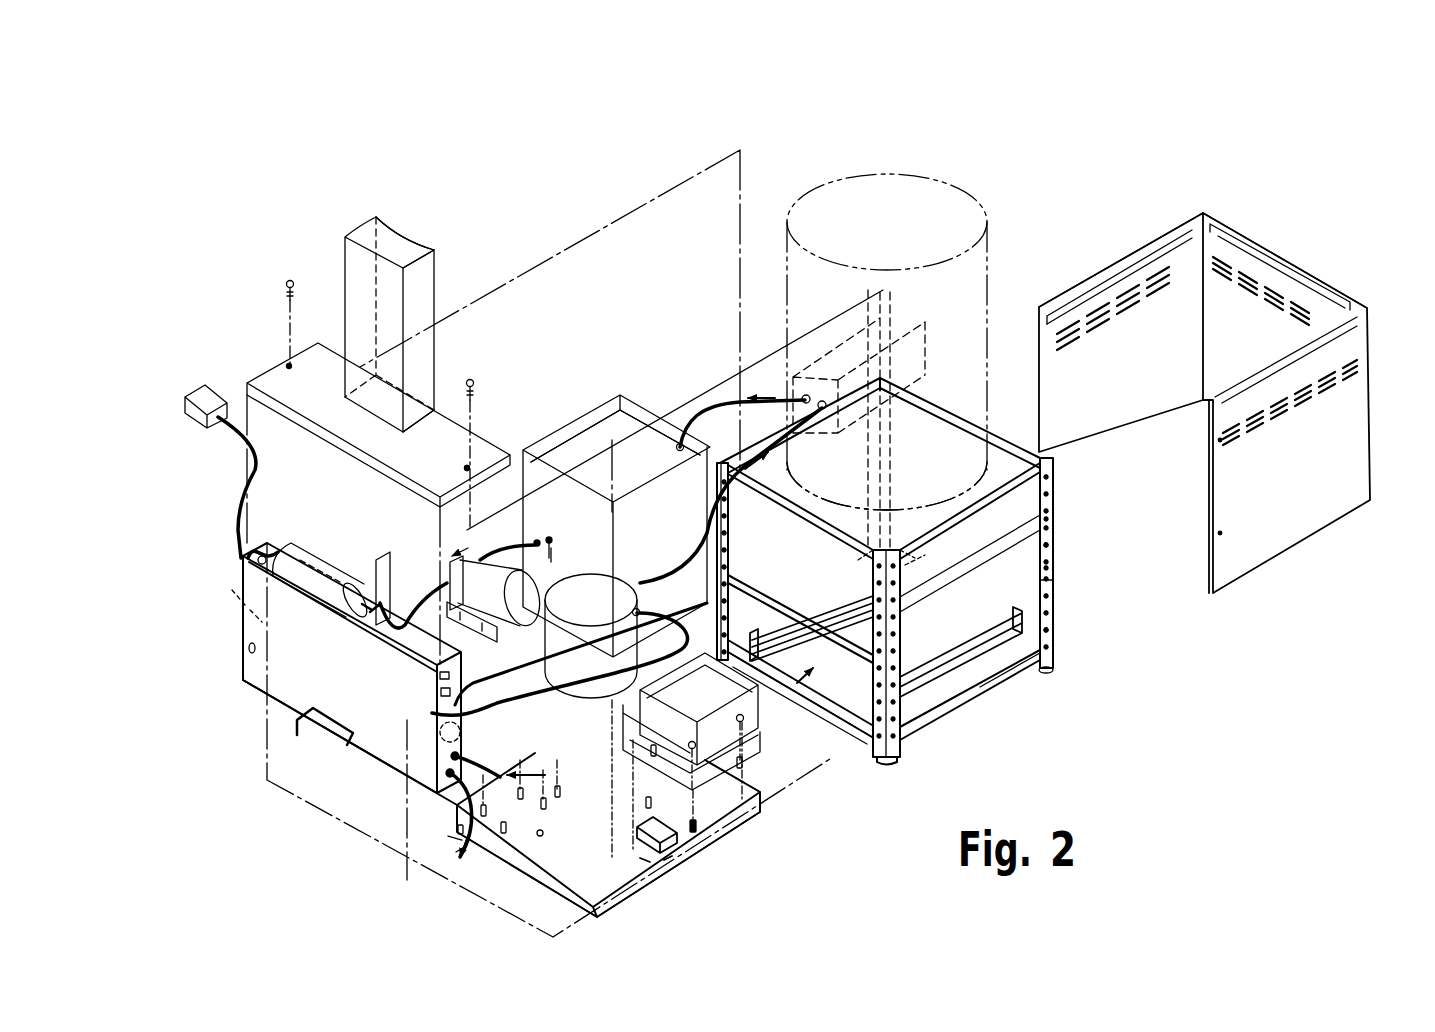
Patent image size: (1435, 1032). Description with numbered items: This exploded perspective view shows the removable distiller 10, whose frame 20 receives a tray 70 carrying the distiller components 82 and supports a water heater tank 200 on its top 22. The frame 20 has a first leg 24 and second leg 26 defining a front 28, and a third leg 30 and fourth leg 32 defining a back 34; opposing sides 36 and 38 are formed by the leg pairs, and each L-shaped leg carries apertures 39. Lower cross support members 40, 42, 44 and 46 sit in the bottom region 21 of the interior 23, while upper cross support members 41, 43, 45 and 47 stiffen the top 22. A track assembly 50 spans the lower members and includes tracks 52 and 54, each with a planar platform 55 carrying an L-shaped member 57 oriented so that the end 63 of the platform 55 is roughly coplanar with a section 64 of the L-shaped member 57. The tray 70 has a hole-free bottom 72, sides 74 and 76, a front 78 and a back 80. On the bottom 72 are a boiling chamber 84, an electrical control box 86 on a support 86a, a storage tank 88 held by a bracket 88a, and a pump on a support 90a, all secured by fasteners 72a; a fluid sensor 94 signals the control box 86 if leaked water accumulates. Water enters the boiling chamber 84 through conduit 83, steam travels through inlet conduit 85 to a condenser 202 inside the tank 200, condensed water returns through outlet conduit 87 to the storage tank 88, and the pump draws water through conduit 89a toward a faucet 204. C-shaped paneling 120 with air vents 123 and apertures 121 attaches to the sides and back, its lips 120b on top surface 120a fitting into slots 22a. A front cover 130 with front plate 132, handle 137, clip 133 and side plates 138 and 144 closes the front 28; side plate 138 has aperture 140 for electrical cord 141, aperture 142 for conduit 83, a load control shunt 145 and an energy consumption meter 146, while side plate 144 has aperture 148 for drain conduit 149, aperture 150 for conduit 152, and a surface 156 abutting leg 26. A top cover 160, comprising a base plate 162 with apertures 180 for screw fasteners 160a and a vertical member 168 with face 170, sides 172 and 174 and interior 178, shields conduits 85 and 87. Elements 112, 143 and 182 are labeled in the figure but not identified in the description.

The distiller 10 is at (818, 856).
The frame 20 is at (898, 574).
The bottom region 21 is at (950, 603).
The top 22 is at (1010, 455).
The slots 22a is at (1057, 588).
The interior 23 is at (1055, 566).
The first leg 24 is at (716, 580).
The second leg 26 is at (907, 760).
The front 28 is at (852, 740).
The third leg 30 is at (858, 513).
The fourth leg 32 is at (1052, 625).
The back 34 is at (1050, 542).
The side 36 is at (640, 567).
The side 38 is at (997, 678).
The apertures 39 is at (1047, 655).
The lower cross support member 40 is at (822, 740).
The upper cross support member 41 is at (783, 527).
The lower cross support member 42 is at (948, 570).
The upper cross support member 43 is at (990, 453).
The lower cross support member 44 is at (790, 590).
The upper cross support member 45 is at (740, 460).
The lower cross support member 46 is at (910, 750).
The upper cross support member 47 is at (1042, 517).
The track assembly 50 is at (833, 678).
The track 52 is at (853, 612).
The track 54 is at (1002, 668).
The platform 55 is at (828, 612).
The L-shaped member 57 is at (800, 645).
The end 63 is at (810, 668).
The section 64 is at (780, 660).
The tray 70 is at (628, 890).
The bottom 72 is at (318, 555).
The fasteners 72a is at (648, 800).
The side 74 is at (597, 655).
The side 76 is at (673, 893).
The front 78 is at (537, 865).
The back 80 is at (757, 772).
The distiller components 82 is at (582, 386).
The conduit 83 is at (547, 775).
The boiling chamber 84 is at (713, 735).
The inlet conduit 85 is at (788, 476).
The electrical control box 86 is at (745, 770).
The support 86a is at (700, 830).
The outlet conduit 87 is at (730, 403).
The storage tank 88 is at (580, 417).
The bracket 88a is at (633, 400).
The conduit 89a is at (513, 551).
The support 90a is at (440, 590).
The fluid sensor 94 is at (660, 765).
The phantom base outline 112 is at (387, 797).
The paneling 120 is at (1224, 368).
The top surface 120a is at (1180, 215).
The lips 120b is at (1072, 270).
The apertures 121 is at (1048, 318).
The air vents 123 is at (1125, 275).
The front cover 130 is at (270, 692).
The front plate 132 is at (272, 700).
The clip 133 is at (375, 560).
The handle 137 is at (300, 730).
The side plate 138 is at (433, 720).
The aperture 140 is at (460, 860).
The electrical cord 141 is at (470, 875).
The aperture 142 is at (453, 838).
The fitting 143 is at (488, 765).
The side plate 144 is at (235, 600).
The load control shunt 145 is at (442, 693).
The energy consumption meter 146 is at (440, 677).
The aperture 148 is at (240, 646).
The conduit 149 is at (490, 622).
The aperture 150 is at (246, 548).
The conduit 152 is at (245, 480).
The surface 156 is at (262, 556).
The top cover 160 is at (354, 344).
The screw type fasteners 160a is at (287, 282).
The base plate 162 is at (262, 388).
The vertical member 168 is at (423, 287).
The face 170 is at (352, 308).
The side 172 is at (352, 270).
The side 174 is at (425, 357).
The interior 178 is at (390, 250).
The apertures 180 is at (270, 372).
The plate hole 182 is at (468, 466).
The water heater tank 200 is at (850, 175).
The condenser 202 is at (903, 313).
The faucet 204 is at (222, 388).